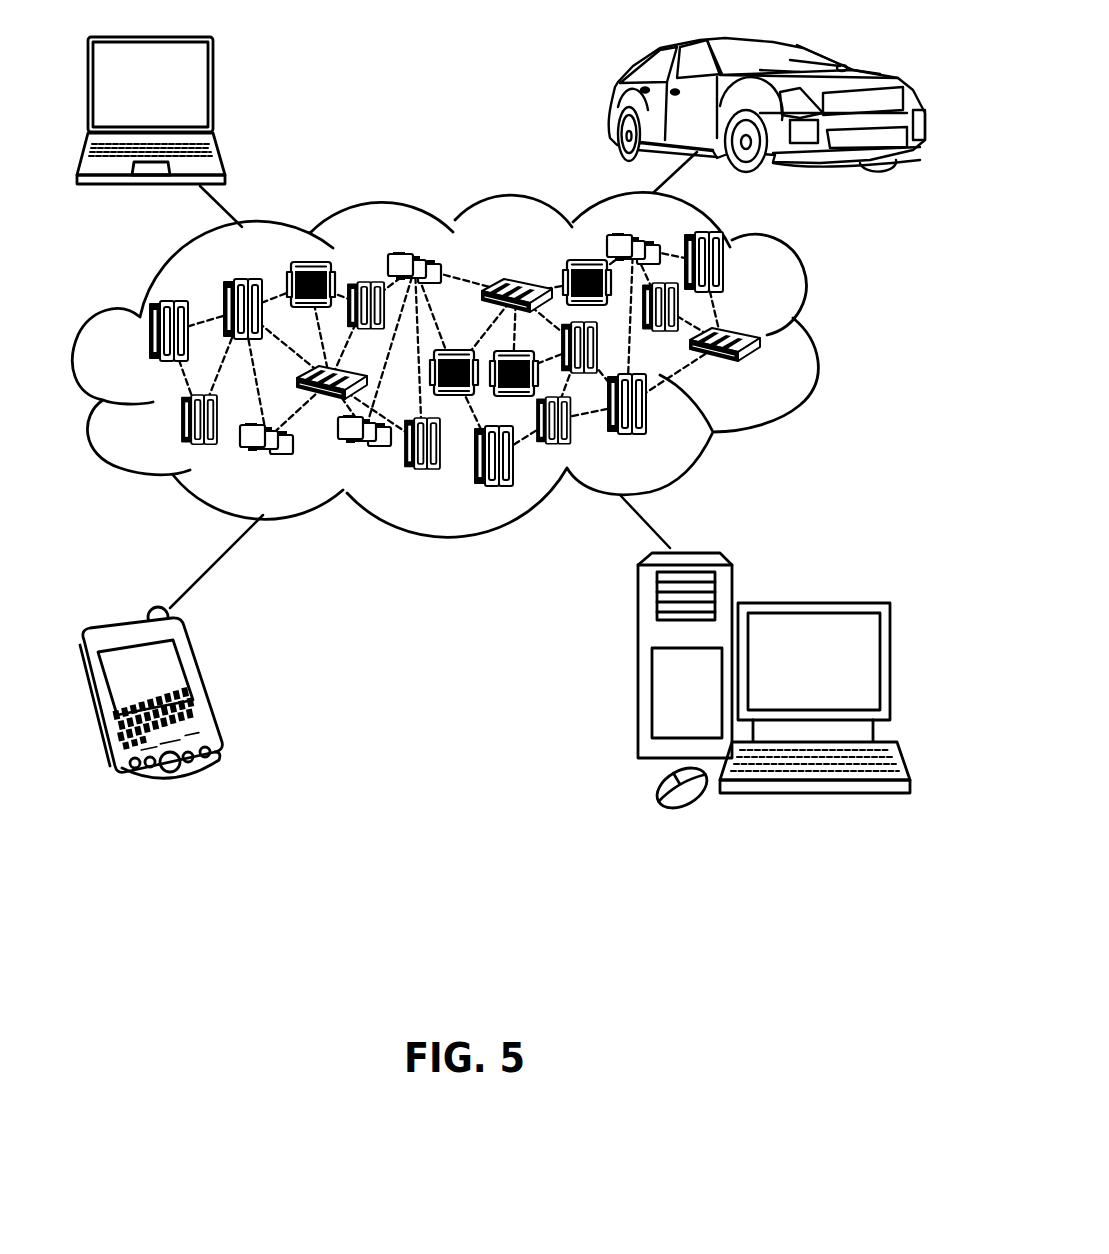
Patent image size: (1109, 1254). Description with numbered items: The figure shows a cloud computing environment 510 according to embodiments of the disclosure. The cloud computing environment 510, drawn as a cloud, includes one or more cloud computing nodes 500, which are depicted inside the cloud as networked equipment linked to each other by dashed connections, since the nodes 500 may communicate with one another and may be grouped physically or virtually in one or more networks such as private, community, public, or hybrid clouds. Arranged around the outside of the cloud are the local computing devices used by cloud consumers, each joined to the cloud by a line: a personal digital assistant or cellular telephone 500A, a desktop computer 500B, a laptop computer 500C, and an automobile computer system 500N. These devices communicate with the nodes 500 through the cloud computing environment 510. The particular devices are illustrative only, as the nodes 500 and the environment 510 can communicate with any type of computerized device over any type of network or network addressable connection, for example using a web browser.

The cloud computing nodes 500 is at (766, 369).
The cloud computing environment 510 is at (810, 340).
The personal digital assistant (PDA) or cellular telephone 500A is at (203, 688).
The desktop computer 500B is at (811, 603).
The laptop computer 500C is at (213, 90).
The automobile computer system 500N is at (617, 103).